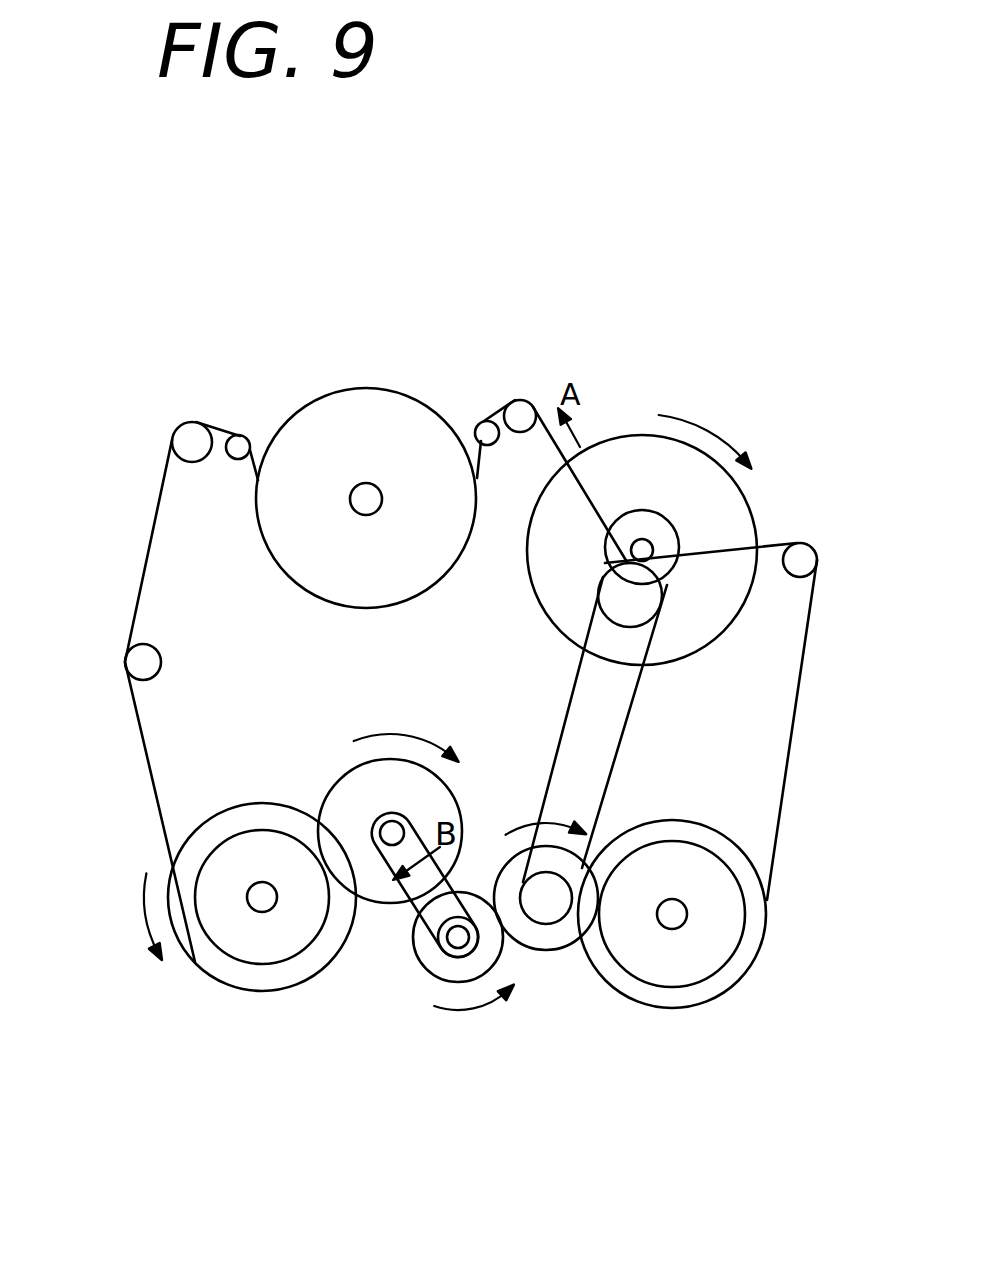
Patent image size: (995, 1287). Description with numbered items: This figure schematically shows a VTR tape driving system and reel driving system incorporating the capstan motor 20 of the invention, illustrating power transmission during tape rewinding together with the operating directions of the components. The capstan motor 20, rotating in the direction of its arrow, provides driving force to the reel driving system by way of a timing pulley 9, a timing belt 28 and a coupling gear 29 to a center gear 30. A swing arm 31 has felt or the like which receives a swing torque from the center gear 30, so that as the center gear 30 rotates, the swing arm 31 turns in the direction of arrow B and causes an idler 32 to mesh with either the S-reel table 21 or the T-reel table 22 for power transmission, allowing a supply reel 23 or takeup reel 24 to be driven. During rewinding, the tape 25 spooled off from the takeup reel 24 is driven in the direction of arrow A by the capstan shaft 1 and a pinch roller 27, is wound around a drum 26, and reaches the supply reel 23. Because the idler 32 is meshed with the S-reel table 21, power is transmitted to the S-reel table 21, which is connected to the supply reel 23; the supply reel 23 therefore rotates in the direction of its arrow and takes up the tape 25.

The capstan shaft 1 is at (665, 532).
The timing pulley 9 is at (682, 540).
The capstan motor 20 is at (630, 450).
The S-reel table 21 is at (217, 935).
The T-reel table 22 is at (743, 880).
The supply reel 23 is at (232, 987).
The takeup reel 24 is at (740, 985).
The tape 25 is at (143, 560).
The drum 26 is at (313, 422).
The pinch roller 27 is at (662, 605).
The timing belt 28 is at (640, 722).
The coupling gear 29 is at (562, 950).
The center gear 30 is at (428, 980).
The swing arm 31 is at (435, 942).
The idler 32 is at (327, 792).